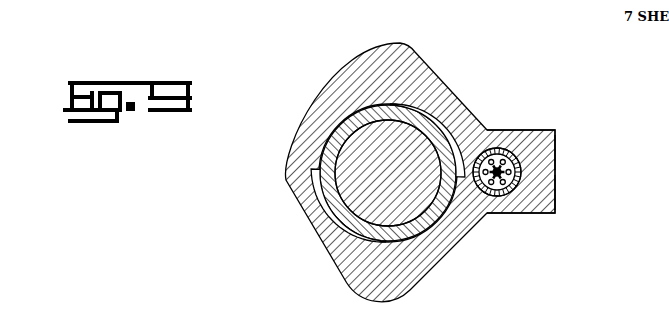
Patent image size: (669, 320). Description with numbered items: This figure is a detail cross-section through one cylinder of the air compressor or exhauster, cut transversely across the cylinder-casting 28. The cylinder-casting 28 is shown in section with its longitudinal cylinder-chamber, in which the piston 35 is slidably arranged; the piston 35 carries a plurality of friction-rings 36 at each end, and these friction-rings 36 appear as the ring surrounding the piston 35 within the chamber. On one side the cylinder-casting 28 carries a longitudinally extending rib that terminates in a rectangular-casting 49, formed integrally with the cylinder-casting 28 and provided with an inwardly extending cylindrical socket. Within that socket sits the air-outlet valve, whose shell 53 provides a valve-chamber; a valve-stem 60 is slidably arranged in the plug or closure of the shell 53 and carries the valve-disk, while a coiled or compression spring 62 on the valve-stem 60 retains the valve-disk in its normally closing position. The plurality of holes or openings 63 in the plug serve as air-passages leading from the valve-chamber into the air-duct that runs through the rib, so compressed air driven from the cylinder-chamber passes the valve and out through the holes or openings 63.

The cylinder-casting 28 is at (402, 55).
The friction-rings 36 is at (403, 108).
The piston 35 is at (440, 110).
The valve-stem 60 is at (554, 130).
The rectangular-casting 49 is at (555, 156).
The coiled or compression spring 62 is at (555, 183).
The shell 53 is at (513, 150).
The holes or openings 63 is at (503, 159).